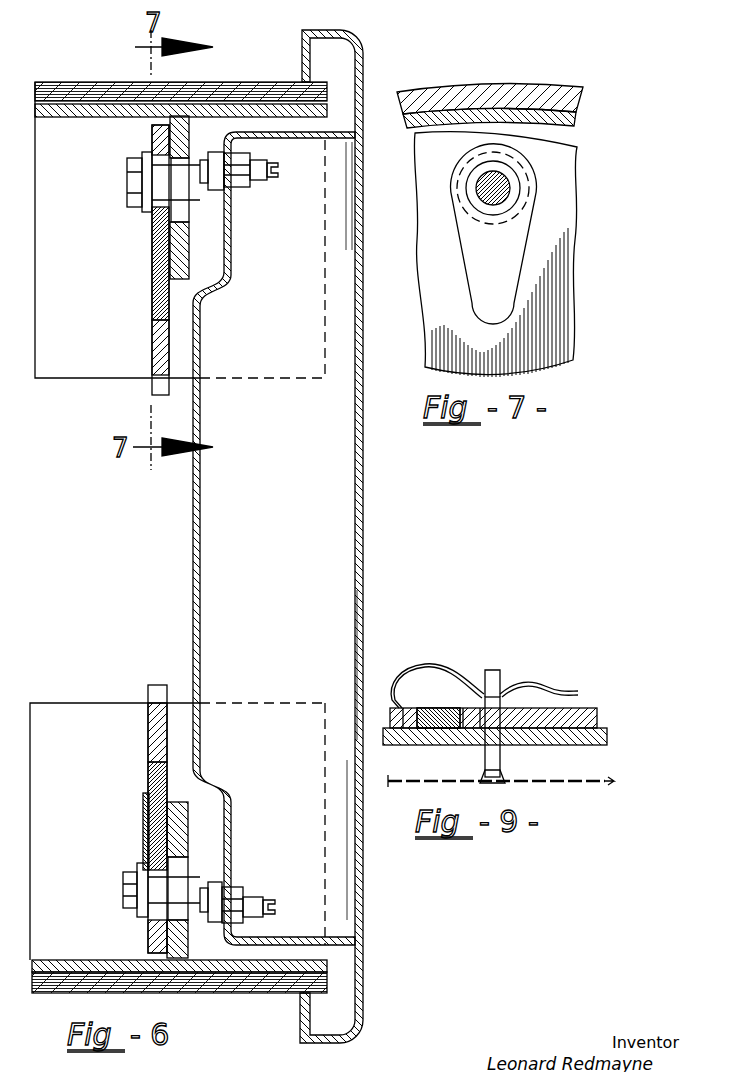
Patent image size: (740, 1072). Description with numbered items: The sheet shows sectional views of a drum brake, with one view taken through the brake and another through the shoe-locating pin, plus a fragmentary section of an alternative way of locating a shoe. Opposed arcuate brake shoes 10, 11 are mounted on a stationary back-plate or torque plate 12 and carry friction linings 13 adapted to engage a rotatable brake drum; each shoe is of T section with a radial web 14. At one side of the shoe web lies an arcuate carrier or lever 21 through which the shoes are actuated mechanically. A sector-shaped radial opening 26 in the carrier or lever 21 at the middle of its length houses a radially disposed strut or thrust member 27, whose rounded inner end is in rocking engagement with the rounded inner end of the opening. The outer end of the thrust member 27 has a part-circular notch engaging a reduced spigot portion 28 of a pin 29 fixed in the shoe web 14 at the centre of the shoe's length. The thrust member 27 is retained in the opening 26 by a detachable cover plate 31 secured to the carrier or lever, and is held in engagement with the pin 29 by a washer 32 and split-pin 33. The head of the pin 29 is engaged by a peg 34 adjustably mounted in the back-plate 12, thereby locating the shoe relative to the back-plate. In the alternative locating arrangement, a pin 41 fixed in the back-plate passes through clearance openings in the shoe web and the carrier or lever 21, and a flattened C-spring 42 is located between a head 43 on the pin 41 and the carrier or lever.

In FIG. 6, the brake shoe 10 is at (53, 967).
In FIG. 6, the brake shoe 11 is at (66, 112).
In FIG. 7, the brake shoe 11 is at (568, 128).
In FIG. 6, the back-plate 12 is at (197, 560).
In FIG. 9, the back-plate 12 is at (519, 788).
In FIG. 6, the friction lining 13 is at (78, 83).
In FIG. 7, the friction lining 13 is at (520, 92).
In FIG. 6, the radial web 14 is at (192, 273).
In FIG. 9, the radial web 14 is at (438, 738).
In FIG. 6, the carrier or lever 21 is at (160, 348).
In FIG. 7, the carrier or lever 21 is at (533, 320).
In FIG. 9, the carrier or lever 21 is at (550, 707).
In FIG. 7, the sector-shaped radial opening 26 is at (527, 223).
In FIG. 6, the strut or thrust member 27 is at (157, 302).
In FIG. 7, the strut or thrust member 27 is at (500, 265).
In FIG. 6, the reduced spigot portion 28 is at (133, 192).
In FIG. 7, the reduced spigot portion 28 is at (513, 188).
In FIG. 6, the pin 29 is at (185, 207).
In FIG. 6, the cover plate 31 is at (145, 833).
In FIG. 6, the washer 32 is at (147, 151).
In FIG. 6, the split-pin 33 is at (143, 210).
In FIG. 6, the peg 34 is at (260, 183).
In FIG. 9, the pin 41 is at (497, 763).
In FIG. 9, the flattened C-spring 42 is at (430, 668).
In FIG. 9, the head 43 is at (492, 670).